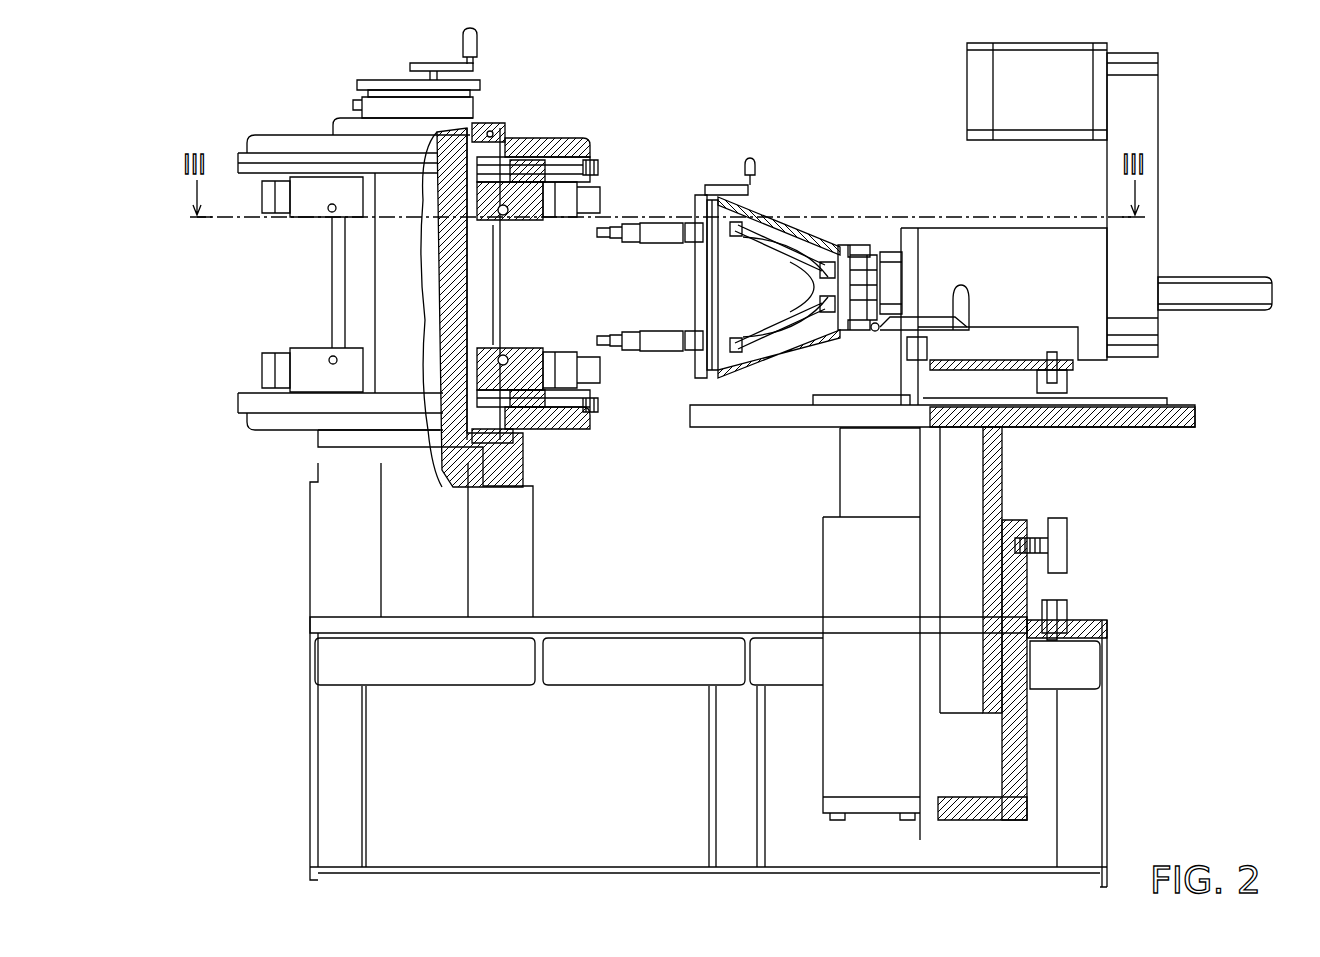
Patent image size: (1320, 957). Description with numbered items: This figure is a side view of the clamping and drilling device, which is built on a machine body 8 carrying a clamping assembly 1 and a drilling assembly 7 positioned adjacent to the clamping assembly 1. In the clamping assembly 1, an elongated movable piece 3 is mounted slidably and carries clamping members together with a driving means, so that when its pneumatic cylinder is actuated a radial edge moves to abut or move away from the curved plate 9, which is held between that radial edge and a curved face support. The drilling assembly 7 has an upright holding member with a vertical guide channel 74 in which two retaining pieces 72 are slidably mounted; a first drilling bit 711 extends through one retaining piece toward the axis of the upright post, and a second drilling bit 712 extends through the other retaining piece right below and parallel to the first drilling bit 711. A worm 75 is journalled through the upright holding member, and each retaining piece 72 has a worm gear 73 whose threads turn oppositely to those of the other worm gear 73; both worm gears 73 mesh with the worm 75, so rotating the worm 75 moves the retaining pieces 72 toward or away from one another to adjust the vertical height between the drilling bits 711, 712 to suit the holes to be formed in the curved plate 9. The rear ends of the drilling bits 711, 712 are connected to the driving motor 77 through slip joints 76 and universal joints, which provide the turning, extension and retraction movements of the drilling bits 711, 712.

The clamping assembly 1 is at (527, 128).
The elongated movable piece 3 is at (540, 345).
The curved plate 9 is at (505, 262).
The drilling assembly 7 is at (1071, 224).
The machine body 8 is at (641, 617).
The retaining piece 72 is at (700, 197).
The worm gear 73 is at (755, 205).
The vertical guide channel 74 is at (695, 268).
The worm 75 is at (725, 268).
The slip joint 76 is at (770, 300).
The driving motor 77 is at (985, 235).
The first drilling bit 711 is at (632, 227).
The second drilling bit 712 is at (632, 340).